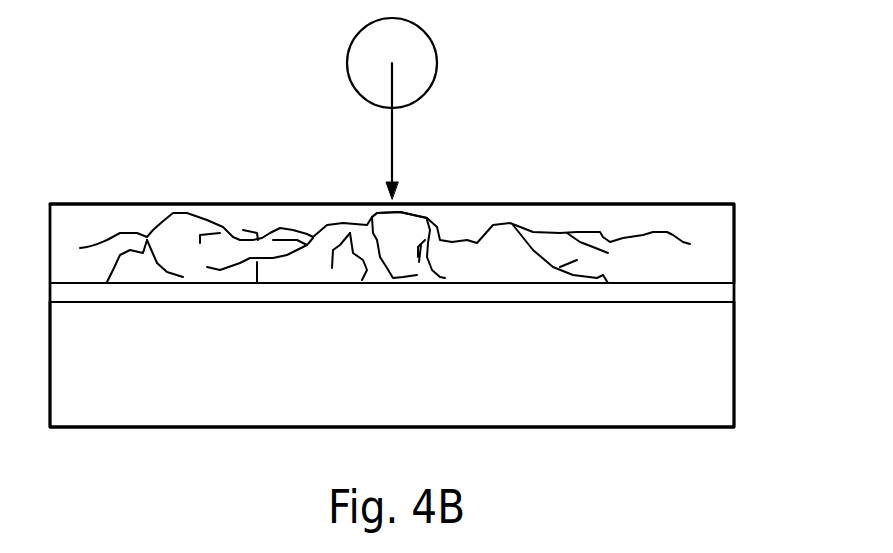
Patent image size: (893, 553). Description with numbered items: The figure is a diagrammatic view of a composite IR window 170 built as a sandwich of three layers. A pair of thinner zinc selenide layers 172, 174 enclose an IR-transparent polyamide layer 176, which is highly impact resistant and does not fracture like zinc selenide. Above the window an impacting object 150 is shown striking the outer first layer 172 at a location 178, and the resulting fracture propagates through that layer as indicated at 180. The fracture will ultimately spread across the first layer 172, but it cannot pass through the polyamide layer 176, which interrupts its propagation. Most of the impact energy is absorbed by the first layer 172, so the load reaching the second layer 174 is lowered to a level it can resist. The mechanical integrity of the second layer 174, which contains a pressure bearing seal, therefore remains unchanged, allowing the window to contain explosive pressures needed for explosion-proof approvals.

The impacting object 150 is at (437, 57).
The composite IR window 170 is at (735, 340).
The first zinc selenide layer 172 is at (735, 228).
The second zinc selenide layer 174 is at (735, 395).
The polyamide layer 176 is at (735, 292).
The impact location 178 is at (397, 199).
The fracture propagation 180 is at (550, 230).